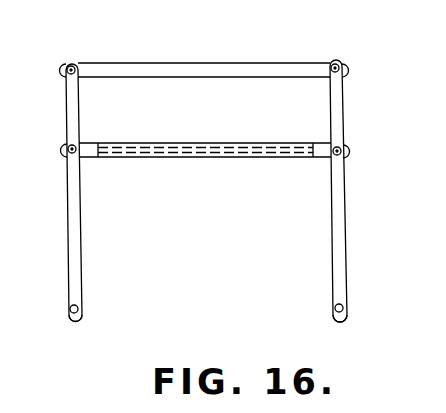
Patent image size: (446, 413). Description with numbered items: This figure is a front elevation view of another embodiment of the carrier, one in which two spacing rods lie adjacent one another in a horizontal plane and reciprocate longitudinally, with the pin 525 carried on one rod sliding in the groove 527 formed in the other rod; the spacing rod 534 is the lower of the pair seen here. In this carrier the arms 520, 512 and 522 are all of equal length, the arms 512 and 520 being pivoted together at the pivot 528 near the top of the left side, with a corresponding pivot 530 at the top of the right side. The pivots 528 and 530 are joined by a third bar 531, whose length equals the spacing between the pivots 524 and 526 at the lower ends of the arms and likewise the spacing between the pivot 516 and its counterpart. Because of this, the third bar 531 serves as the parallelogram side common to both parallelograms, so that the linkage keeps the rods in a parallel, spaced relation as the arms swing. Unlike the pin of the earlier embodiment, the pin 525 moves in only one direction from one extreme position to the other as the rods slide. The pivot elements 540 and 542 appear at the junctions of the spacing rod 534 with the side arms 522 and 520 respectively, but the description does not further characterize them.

The arm 512 is at (43, 193).
The pivot 516 is at (70, 309).
The arm 520 is at (68, 226).
The arm 522 is at (341, 235).
The pivot 524 is at (79, 321).
The pivot 526 is at (338, 321).
The pivot 528 is at (72, 66).
The pivot 530 is at (337, 63).
The third bar 531 is at (217, 73).
The spacing rod 534 is at (250, 157).
The pin 525 is at (204, 148).
The groove 527 is at (163, 143).
The right lower pivot pin 540 is at (343, 149).
The left lower pivot pin 542 is at (68, 148).